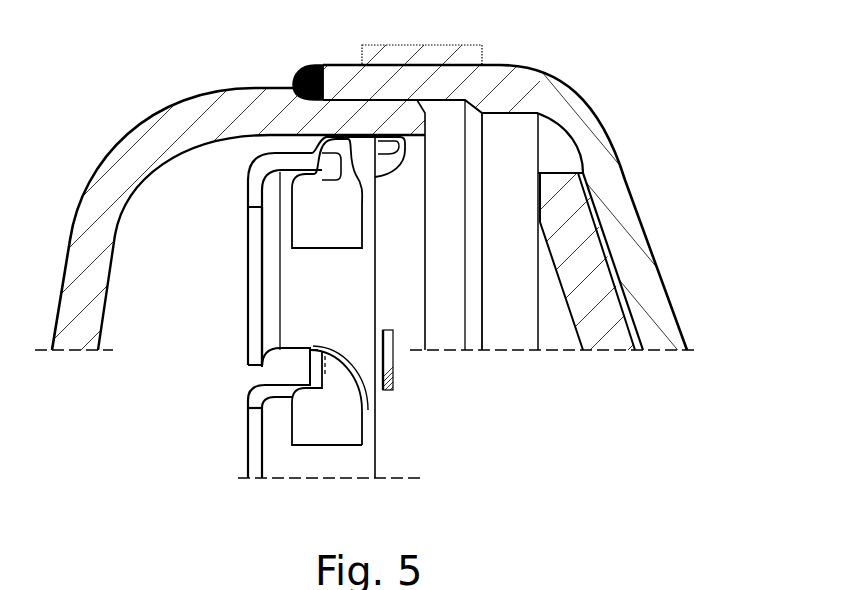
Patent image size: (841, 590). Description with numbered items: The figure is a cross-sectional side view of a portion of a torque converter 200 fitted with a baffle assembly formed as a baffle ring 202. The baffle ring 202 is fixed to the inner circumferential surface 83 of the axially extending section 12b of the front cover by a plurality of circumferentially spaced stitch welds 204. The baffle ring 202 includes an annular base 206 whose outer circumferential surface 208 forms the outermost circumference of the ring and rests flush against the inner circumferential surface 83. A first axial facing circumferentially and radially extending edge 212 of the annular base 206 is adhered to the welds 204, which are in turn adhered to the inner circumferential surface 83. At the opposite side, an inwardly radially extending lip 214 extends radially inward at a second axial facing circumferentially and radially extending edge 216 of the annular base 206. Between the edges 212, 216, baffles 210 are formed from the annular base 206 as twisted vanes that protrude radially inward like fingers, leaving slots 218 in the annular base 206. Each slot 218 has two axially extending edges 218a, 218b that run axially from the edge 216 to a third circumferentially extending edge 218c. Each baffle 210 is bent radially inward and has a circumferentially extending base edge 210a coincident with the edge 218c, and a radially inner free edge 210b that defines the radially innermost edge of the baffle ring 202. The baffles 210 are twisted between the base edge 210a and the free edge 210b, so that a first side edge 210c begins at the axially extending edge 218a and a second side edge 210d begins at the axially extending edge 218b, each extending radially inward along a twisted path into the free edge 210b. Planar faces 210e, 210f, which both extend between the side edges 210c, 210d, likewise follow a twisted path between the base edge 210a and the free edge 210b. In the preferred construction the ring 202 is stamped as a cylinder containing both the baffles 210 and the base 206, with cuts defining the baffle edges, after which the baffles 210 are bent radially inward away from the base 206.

The torque converter 200 is at (619, 88).
The axially extending section of front cover 12b is at (272, 105).
The inner circumferential surface 83 is at (257, 133).
The outer circumferential surface 208 is at (345, 135).
The planar face 210f is at (393, 150).
The stitch welds 204 is at (413, 167).
The planar face 210e is at (343, 233).
The second axial facing edge 216 is at (253, 186).
The inwardly radially extending lip 214 is at (253, 268).
The annular base 206 is at (280, 283).
The baffle ring 202 is at (234, 245).
The first axial facing edge 212 is at (373, 466).
The baffles 210 is at (345, 227).
The axially extending edge 218b is at (288, 386).
The slots 218 is at (265, 150).
The axially extending edge 218a is at (287, 348).
The base edge 210a is at (311, 348).
The third circumferentially extending edge 218c is at (367, 410).
The first side edge 210c is at (362, 440).
The second side edge 210d is at (288, 420).
The free edge 210b is at (312, 452).